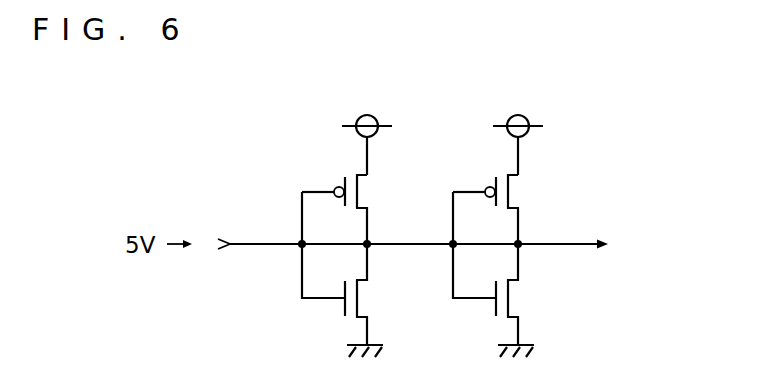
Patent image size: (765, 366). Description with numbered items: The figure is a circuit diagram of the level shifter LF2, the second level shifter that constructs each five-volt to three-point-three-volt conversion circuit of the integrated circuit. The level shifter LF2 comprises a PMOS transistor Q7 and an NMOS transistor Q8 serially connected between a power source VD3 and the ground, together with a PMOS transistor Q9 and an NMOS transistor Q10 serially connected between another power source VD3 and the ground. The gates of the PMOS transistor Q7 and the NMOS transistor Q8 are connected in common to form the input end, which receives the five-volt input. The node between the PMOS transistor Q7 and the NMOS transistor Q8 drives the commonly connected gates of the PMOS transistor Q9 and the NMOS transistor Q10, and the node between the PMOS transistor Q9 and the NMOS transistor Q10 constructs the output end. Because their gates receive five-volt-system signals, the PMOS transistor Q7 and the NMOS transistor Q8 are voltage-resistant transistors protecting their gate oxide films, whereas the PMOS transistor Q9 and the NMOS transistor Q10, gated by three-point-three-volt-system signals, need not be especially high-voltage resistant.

The PMOS transistor Q7 is at (365, 192).
The NMOS transistor Q8 is at (365, 297).
The PMOS transistor Q9 is at (516, 192).
The NMOS transistor Q10 is at (516, 297).
The power source VD3 is at (440, 133).
The level shifter LF2 is at (678, 113).